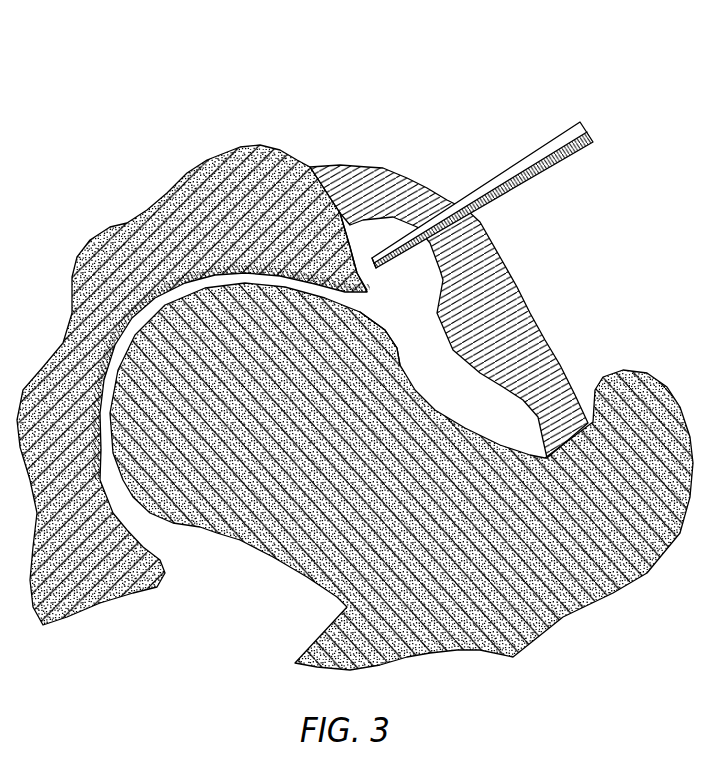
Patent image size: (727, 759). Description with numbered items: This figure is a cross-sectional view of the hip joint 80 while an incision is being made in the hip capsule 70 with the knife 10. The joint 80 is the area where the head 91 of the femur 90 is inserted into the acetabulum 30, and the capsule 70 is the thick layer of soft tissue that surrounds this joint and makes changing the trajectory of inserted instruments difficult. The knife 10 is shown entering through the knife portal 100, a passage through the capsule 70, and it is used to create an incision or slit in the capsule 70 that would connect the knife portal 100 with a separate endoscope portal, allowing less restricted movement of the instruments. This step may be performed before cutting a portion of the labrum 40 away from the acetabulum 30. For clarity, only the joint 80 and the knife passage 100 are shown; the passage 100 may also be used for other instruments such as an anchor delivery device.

The knife 10 is at (495, 160).
The acetabulum 30 is at (253, 143).
The labrum 40 is at (368, 292).
The hip capsule 70 is at (510, 263).
The hip joint 80 is at (323, 147).
The femur 90 is at (623, 580).
The head of the femur 91 is at (400, 350).
The knife portal 100 is at (445, 203).